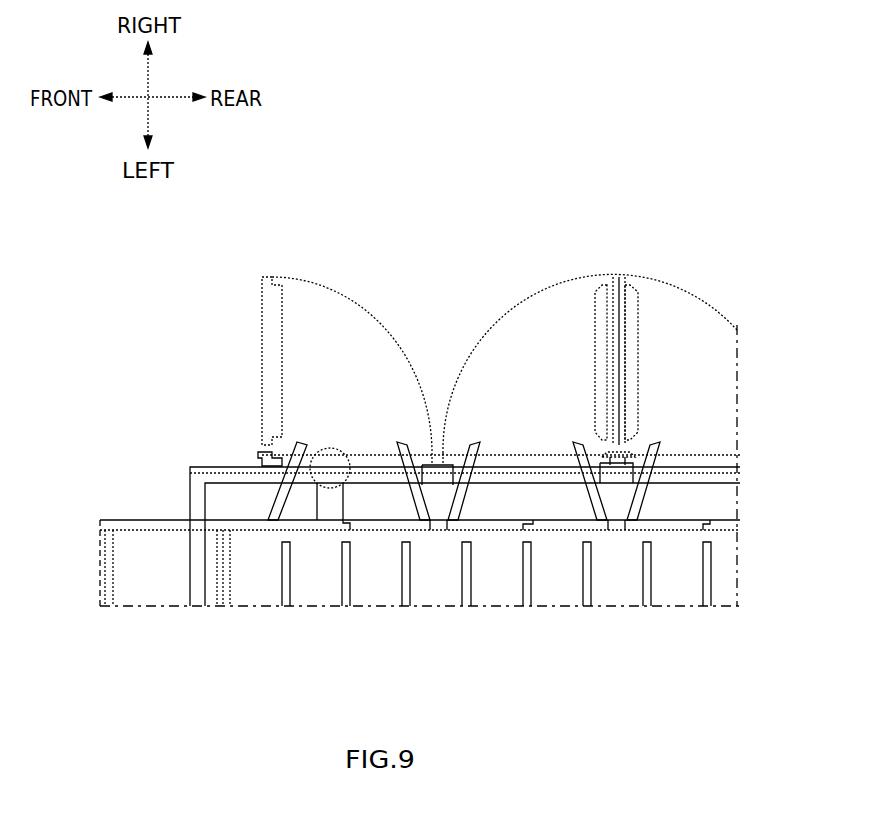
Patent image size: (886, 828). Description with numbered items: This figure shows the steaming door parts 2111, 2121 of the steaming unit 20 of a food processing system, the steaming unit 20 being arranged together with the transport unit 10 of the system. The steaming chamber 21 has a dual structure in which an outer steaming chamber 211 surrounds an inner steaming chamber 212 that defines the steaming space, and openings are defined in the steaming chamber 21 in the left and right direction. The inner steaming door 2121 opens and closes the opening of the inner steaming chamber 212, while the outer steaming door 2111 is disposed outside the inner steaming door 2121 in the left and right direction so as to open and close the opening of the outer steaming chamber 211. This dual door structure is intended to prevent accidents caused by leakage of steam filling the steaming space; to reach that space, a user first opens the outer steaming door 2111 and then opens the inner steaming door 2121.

The transport unit 10 is at (132, 494).
The steaming unit 20 is at (204, 458).
The steaming chamber 21 is at (219, 470).
The outer steaming chamber 211 is at (237, 473).
The inner steaming chamber 212 is at (238, 525).
The outer steaming door 2111 is at (262, 312).
The inner steaming door 2121 is at (393, 440).